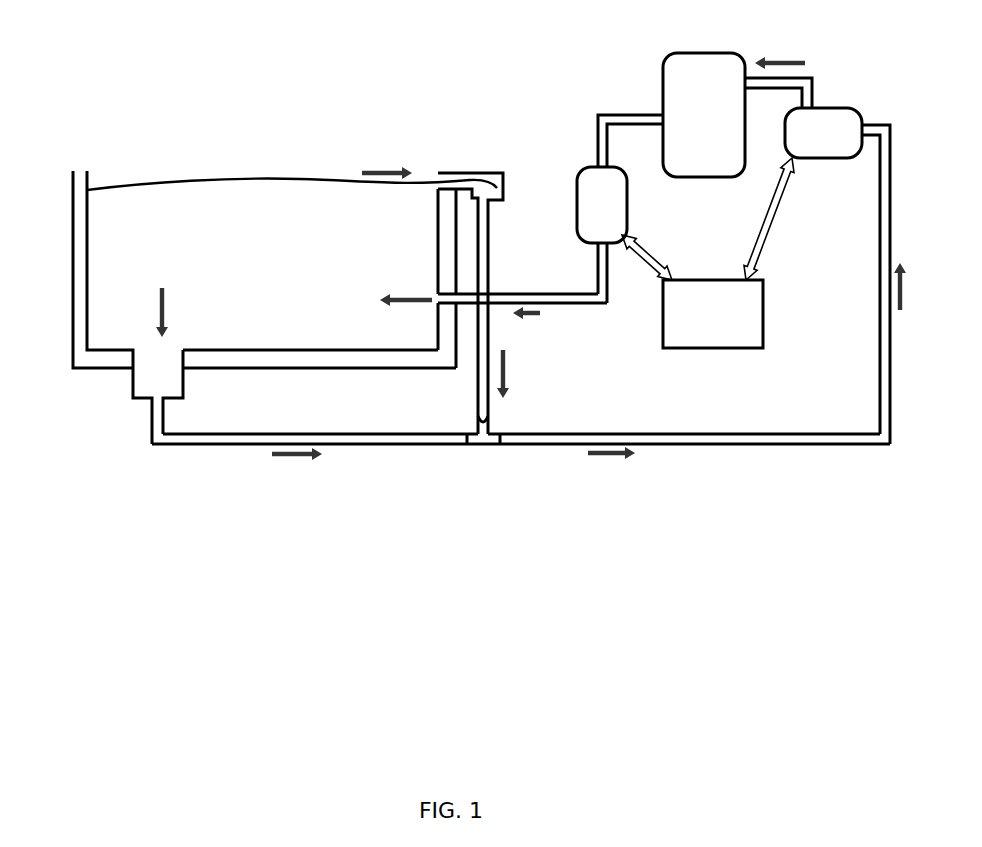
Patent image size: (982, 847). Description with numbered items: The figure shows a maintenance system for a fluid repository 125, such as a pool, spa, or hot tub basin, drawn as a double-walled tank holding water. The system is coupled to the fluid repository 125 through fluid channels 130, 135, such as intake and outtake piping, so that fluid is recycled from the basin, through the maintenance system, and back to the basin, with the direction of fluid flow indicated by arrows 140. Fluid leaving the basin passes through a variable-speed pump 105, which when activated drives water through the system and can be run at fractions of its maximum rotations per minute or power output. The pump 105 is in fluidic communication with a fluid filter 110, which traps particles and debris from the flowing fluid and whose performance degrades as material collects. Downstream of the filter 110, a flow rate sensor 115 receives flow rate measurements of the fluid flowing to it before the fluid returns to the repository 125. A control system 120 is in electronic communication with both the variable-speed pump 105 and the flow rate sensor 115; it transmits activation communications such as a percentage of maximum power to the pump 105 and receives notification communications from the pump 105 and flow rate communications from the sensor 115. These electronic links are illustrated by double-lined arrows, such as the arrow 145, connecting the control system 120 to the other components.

The variable-speed pump 105 is at (830, 108).
The fluid filter 110 is at (663, 85).
The flow rate sensor 115 is at (578, 180).
The control system 120 is at (763, 305).
The fluid repository 125 is at (73, 270).
The return pipe 130 is at (500, 293).
The outlet pipe 135 is at (185, 444).
The arrows 140 is at (605, 455).
The arrow 145 is at (663, 281).